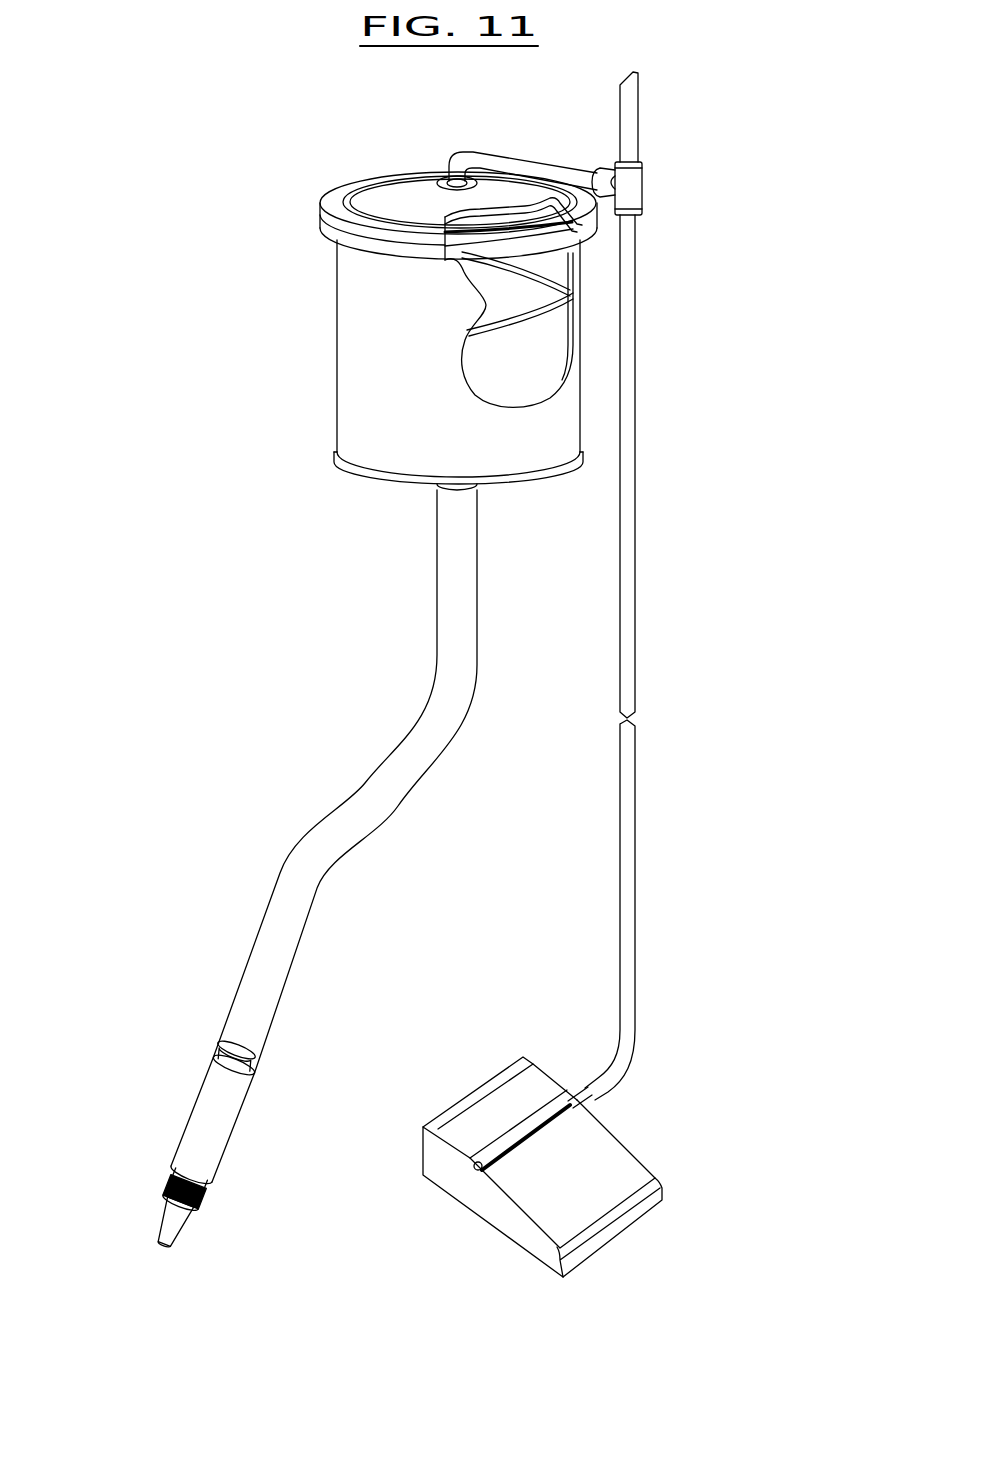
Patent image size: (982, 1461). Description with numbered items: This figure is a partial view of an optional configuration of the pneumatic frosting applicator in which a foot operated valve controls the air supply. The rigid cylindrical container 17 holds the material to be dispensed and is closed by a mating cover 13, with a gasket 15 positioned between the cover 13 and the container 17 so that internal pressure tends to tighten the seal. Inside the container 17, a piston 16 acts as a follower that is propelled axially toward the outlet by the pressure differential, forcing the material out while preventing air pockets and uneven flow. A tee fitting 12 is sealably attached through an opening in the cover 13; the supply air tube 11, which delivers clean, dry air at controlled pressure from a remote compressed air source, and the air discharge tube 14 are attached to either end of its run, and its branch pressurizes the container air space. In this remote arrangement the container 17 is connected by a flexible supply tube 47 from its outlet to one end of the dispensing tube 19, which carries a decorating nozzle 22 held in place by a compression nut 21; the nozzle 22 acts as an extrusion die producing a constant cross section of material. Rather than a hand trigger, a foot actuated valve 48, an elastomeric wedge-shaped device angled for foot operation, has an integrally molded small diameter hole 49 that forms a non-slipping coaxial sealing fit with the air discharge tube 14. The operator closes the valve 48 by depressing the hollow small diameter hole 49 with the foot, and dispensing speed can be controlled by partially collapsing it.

The supply air tube 11 is at (639, 104).
The tee fitting 12 is at (643, 187).
The cover 13 is at (320, 212).
The air discharge tube 14 is at (632, 900).
The gasket 15 is at (530, 240).
The piston 16 is at (530, 332).
The container 17 is at (335, 403).
The dispensing tube 19 is at (192, 1100).
The compression nut 21 is at (205, 1203).
The nozzle 22 is at (177, 1238).
The flexible supply tube 47 is at (437, 655).
The foot actuated valve 48 is at (575, 1158).
The small diameter hole 49 is at (476, 1168).